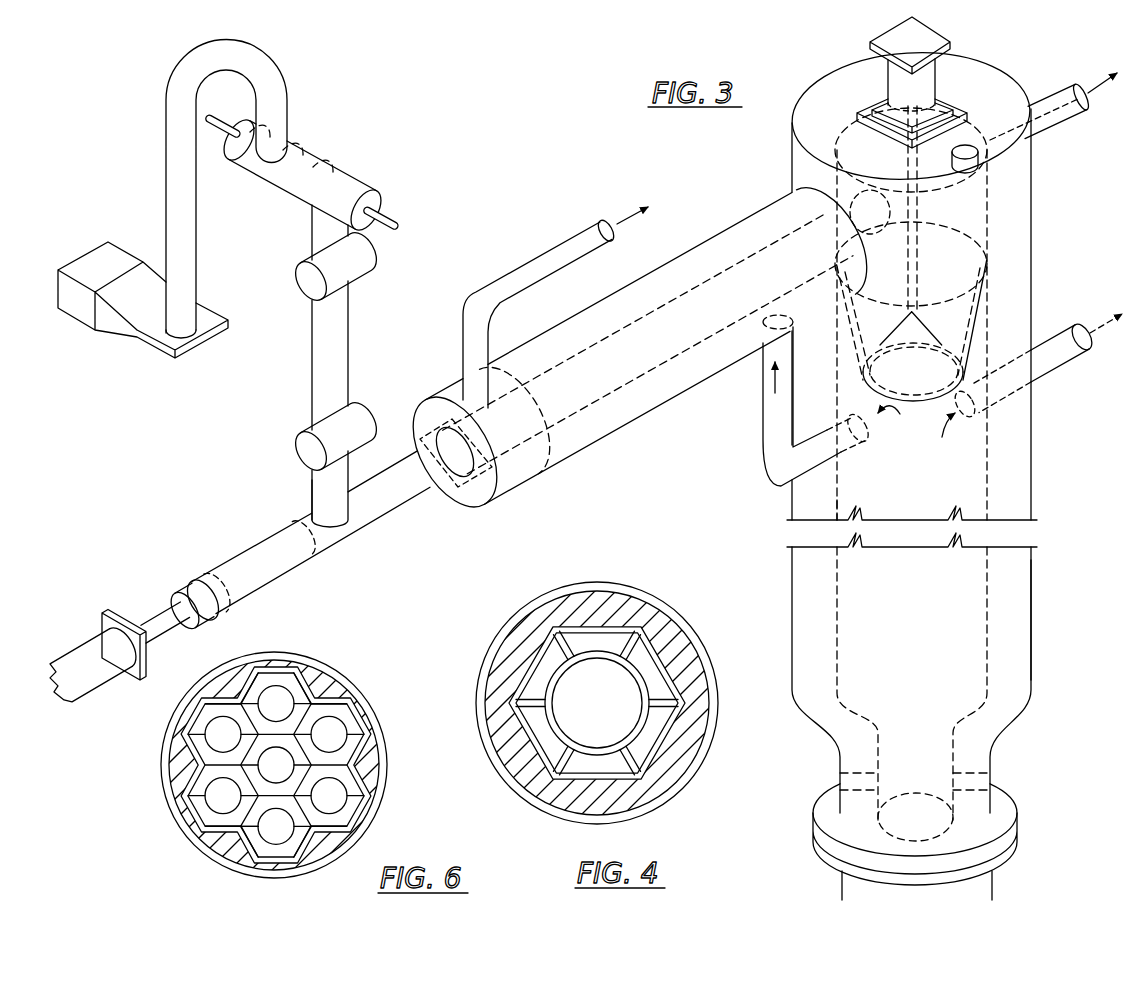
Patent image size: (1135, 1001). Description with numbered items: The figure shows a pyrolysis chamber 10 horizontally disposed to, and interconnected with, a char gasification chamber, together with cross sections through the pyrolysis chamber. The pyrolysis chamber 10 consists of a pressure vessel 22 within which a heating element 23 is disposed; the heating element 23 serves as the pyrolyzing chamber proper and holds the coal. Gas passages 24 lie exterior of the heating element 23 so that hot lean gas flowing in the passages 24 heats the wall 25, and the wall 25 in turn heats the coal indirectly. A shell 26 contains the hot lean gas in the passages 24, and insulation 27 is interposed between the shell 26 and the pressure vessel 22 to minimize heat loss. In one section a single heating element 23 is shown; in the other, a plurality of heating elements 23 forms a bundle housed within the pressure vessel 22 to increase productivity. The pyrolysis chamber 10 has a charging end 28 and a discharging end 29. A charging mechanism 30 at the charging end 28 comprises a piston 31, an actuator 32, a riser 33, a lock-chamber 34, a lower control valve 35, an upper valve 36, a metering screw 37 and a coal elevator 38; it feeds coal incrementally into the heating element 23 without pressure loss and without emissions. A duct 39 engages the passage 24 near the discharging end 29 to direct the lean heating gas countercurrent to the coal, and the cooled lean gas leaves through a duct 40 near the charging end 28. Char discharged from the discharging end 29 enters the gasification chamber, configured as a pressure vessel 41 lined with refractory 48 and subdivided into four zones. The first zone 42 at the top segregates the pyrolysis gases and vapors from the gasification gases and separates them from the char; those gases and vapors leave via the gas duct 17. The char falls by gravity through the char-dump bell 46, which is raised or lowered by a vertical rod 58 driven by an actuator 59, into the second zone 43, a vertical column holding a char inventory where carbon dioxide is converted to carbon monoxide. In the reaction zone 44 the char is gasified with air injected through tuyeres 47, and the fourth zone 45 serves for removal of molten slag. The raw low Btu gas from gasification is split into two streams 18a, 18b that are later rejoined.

In FIG. 3, the pyrolysis chamber 10 is at (670, 329).
In FIG. 3, the gas duct 17 is at (1052, 88).
In FIG. 3, the raw low Btu gas stream 18a is at (1027, 388).
In FIG. 3, the raw low Btu gas stream 18b is at (774, 317).
In FIG. 3, the pressure vessel 22 is at (634, 420).
In FIG. 4, the pressure vessel 22 is at (652, 598).
In FIG. 6, the pressure vessel 22 is at (332, 661).
In FIG. 3, the heating element 23 is at (455, 477).
In FIG. 4, the heating element 23 is at (612, 717).
In FIG. 6, the heating element 23 is at (276, 765).
In FIG. 4, the gas passages 24 is at (656, 728).
In FIG. 4, the wall 25 is at (598, 651).
In FIG. 4, the shell 26 is at (672, 650).
In FIG. 6, the shell 26 is at (363, 706).
In FIG. 4, the insulation 27 is at (696, 682).
In FIG. 6, the insulation 27 is at (374, 747).
In FIG. 3, the charging end 28 is at (431, 414).
In FIG. 3, the discharging end 29 is at (790, 181).
In FIG. 3, the charging mechanism 30 is at (392, 492).
In FIG. 3, the piston 31 is at (230, 582).
In FIG. 3, the actuator 32 is at (71, 650).
In FIG. 3, the riser 33 is at (314, 492).
In FIG. 3, the lock-chamber 34 is at (311, 374).
In FIG. 3, the lower control valve 35 is at (298, 453).
In FIG. 3, the upper valve 36 is at (294, 286).
In FIG. 3, the metering screw 37 is at (330, 170).
In FIG. 3, the coal elevator 38 is at (287, 83).
In FIG. 3, the duct 39 is at (763, 444).
In FIG. 3, the duct 40 is at (552, 250).
In FIG. 3, the pressure vessel 41 is at (1134, 41).
In FIG. 3, the first zone 42 is at (960, 221).
In FIG. 3, the second zone 43 is at (918, 494).
In FIG. 3, the reaction zone 44 is at (926, 786).
In FIG. 3, the fourth zone 45 is at (925, 917).
In FIG. 3, the char-dump bell 46 is at (915, 365).
In FIG. 3, the tuyeres 47 is at (827, 777).
In FIG. 3, the refractory 48 is at (1014, 585).
In FIG. 3, the vertical rod 58 is at (923, 258).
In FIG. 3, the actuator 59 is at (927, 76).